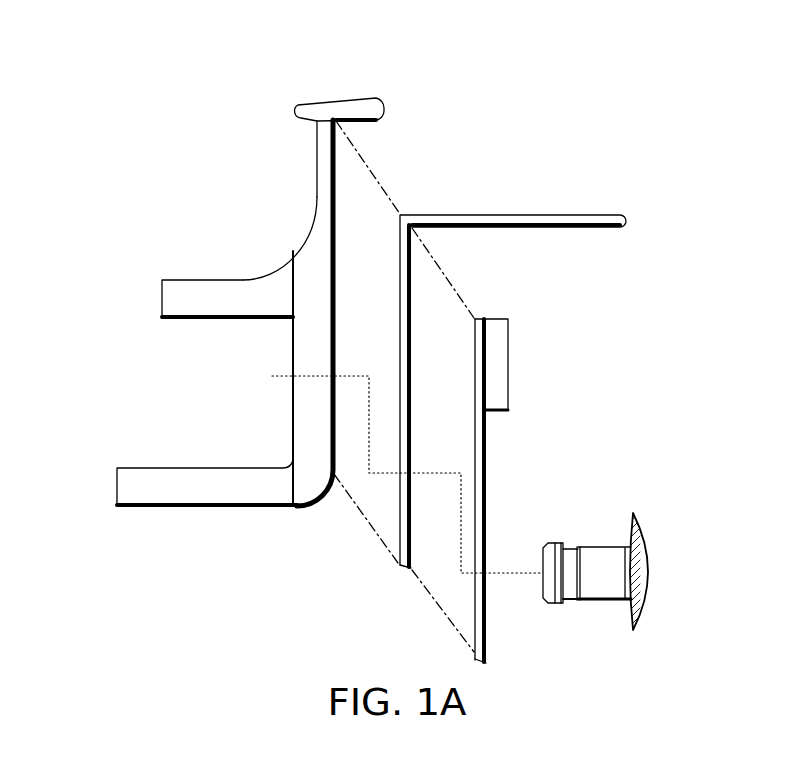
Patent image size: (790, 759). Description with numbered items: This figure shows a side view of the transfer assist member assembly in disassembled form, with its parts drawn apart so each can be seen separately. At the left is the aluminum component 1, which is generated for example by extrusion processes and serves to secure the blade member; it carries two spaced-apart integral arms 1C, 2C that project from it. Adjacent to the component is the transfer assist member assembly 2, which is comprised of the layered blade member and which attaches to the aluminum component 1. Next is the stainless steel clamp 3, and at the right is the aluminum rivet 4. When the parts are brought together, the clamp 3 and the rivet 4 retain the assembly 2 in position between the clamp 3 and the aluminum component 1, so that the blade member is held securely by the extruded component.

The aluminum component 1 is at (307, 252).
The integral arm 1C is at (175, 300).
The integral arm 2C is at (127, 487).
The transfer assist member assembly 2 is at (562, 214).
The stainless steel clamp 3 is at (497, 378).
The aluminum rivet 4 is at (640, 585).